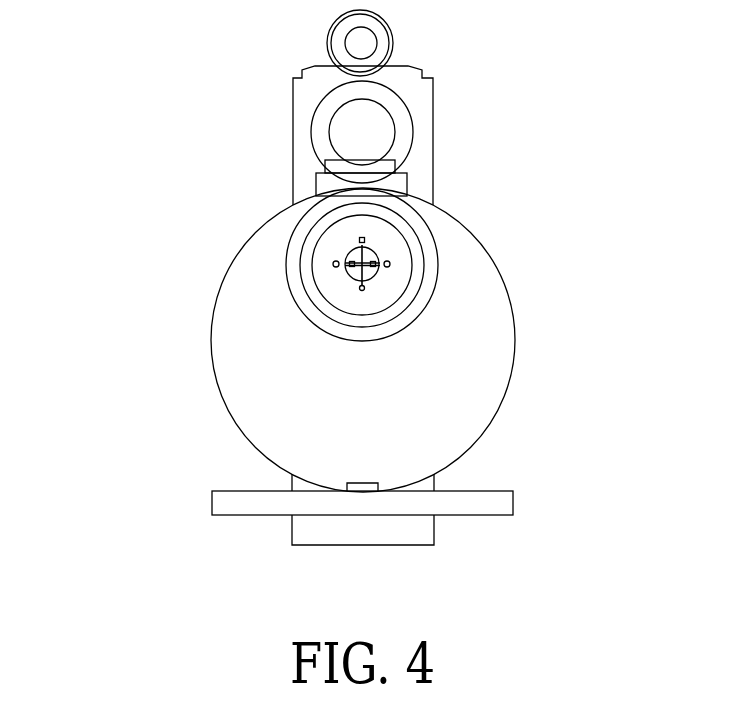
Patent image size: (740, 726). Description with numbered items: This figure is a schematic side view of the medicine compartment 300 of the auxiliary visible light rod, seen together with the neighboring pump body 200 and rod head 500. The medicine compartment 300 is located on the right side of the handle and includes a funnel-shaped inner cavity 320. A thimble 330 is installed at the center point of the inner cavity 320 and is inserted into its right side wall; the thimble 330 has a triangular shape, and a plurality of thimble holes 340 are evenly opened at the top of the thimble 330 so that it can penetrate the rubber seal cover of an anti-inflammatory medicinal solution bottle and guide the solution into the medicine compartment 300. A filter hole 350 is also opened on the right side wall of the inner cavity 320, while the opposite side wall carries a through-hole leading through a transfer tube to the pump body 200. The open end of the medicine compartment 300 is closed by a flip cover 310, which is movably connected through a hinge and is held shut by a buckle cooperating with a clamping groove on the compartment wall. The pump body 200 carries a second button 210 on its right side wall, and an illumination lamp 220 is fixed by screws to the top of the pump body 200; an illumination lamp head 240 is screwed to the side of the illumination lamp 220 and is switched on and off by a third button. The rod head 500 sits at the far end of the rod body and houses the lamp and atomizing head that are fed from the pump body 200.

The pump body 200 is at (433, 173).
The second button 210 is at (365, 111).
The illumination lamp 220 is at (361, 43).
The illumination lamp head 240 is at (361, 43).
The rod head 500 is at (312, 122).
The medicine compartment 300 is at (515, 340).
The flip cover 310 is at (463, 498).
The inner cavity 320 is at (435, 245).
The thimble 330 is at (346, 278).
The thimble hole 340 is at (196, 229).
The filter hole 350 is at (196, 310).